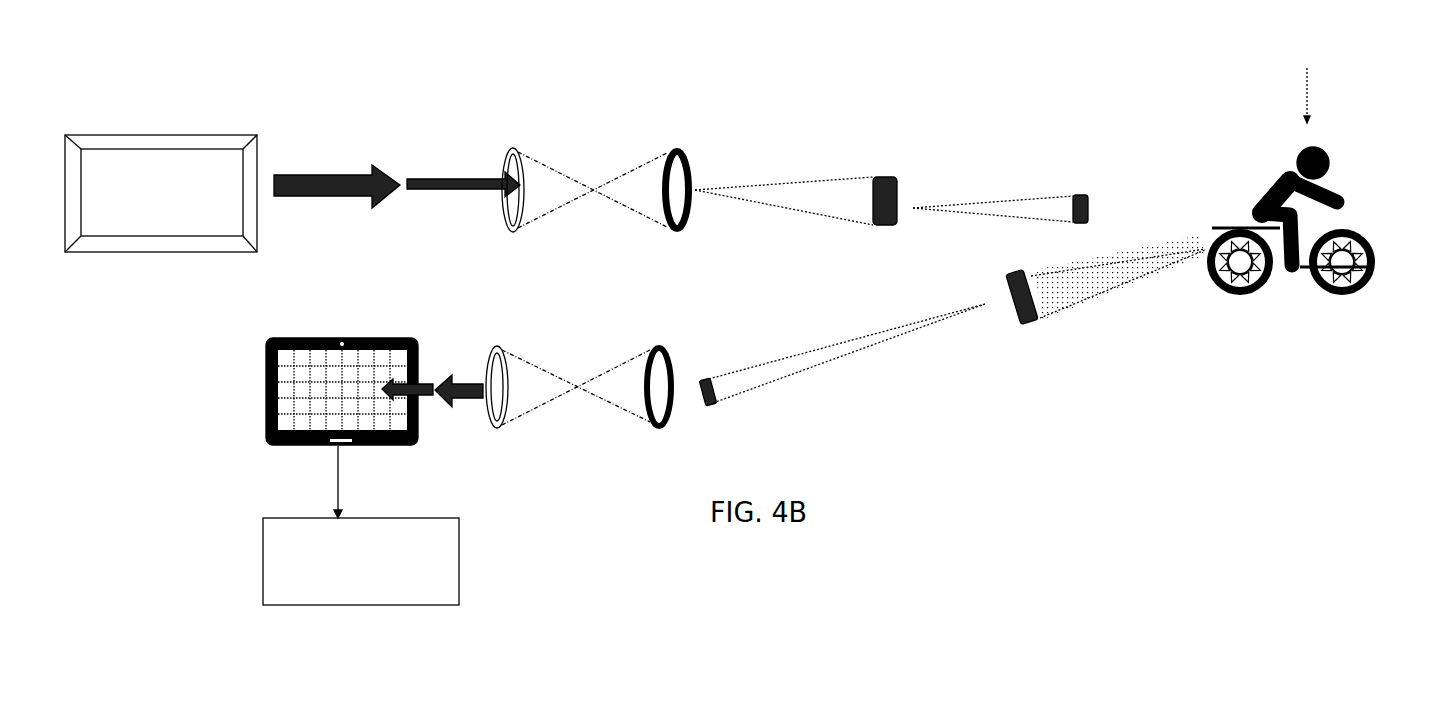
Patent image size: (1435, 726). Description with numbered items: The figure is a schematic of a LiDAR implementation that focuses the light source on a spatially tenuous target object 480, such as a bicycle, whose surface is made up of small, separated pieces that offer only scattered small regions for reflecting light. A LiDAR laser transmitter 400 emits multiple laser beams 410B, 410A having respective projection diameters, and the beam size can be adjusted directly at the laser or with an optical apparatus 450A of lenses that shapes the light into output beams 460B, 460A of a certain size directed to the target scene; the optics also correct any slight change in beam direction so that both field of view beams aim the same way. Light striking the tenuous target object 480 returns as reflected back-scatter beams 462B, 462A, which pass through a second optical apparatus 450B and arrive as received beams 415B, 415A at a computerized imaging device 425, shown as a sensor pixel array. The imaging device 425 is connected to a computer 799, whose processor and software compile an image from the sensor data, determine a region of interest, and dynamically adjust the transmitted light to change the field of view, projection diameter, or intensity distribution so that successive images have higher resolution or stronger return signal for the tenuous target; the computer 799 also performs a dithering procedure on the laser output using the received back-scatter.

The LiDAR laser transmitter 400 is at (200, 133).
The laser beam 410B is at (340, 176).
The laser beam 410A is at (470, 178).
The optical apparatus 450A is at (643, 176).
The output beam 460B is at (825, 178).
The output beam 460A is at (1020, 195).
The spatially tenuous target object 480 is at (1362, 218).
The reflected back-scatter beam 462B is at (1113, 283).
The reflected back-scatter beam 462A is at (853, 337).
The optical apparatus 450B is at (600, 370).
The received beam 415B is at (470, 380).
The received beam 415A is at (428, 380).
The computerized imaging device 425 is at (365, 335).
The computer 799 is at (361, 525).